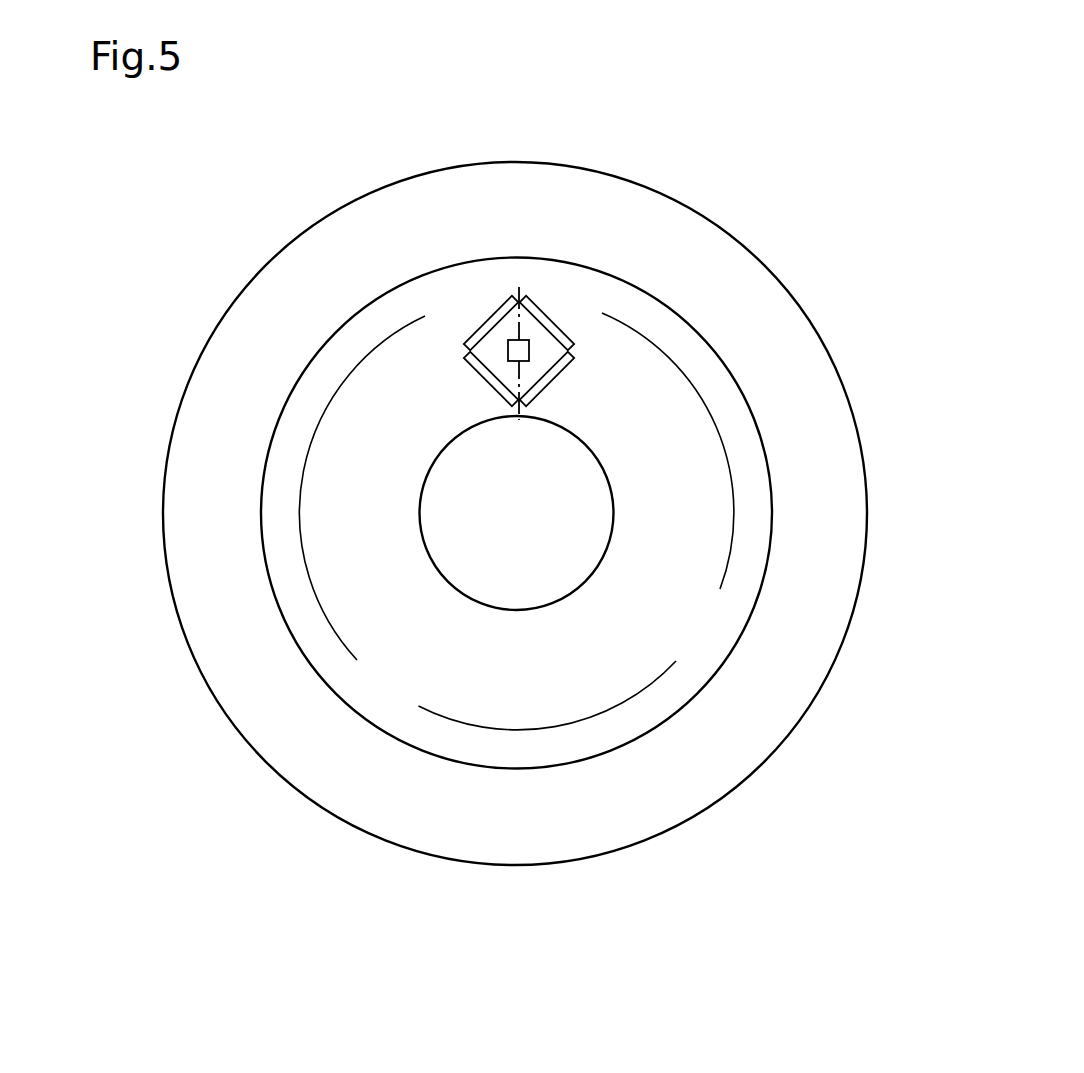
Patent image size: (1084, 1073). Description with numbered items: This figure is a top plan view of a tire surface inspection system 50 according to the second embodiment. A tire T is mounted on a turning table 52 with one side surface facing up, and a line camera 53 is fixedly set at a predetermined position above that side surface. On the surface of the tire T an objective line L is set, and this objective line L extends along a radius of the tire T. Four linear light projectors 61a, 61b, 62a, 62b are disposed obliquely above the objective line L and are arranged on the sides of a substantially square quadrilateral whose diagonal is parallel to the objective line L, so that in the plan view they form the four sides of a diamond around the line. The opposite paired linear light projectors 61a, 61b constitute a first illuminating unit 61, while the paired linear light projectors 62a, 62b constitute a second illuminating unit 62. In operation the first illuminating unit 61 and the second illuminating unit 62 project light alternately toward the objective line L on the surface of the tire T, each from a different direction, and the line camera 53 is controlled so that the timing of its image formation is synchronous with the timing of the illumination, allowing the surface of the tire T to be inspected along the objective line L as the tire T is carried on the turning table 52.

The tire surface inspection system 50 is at (528, 125).
The turning table 52 is at (805, 718).
The line camera 53 is at (531, 350).
The first illuminating unit 61 is at (518, 262).
The linear light projector 61a is at (490, 320).
The linear light projector 61b is at (557, 375).
The second illuminating unit 62 is at (531, 270).
The linear light projector 62a is at (548, 318).
The linear light projector 62b is at (478, 373).
The tire T is at (342, 333).
The objective line L is at (517, 382).